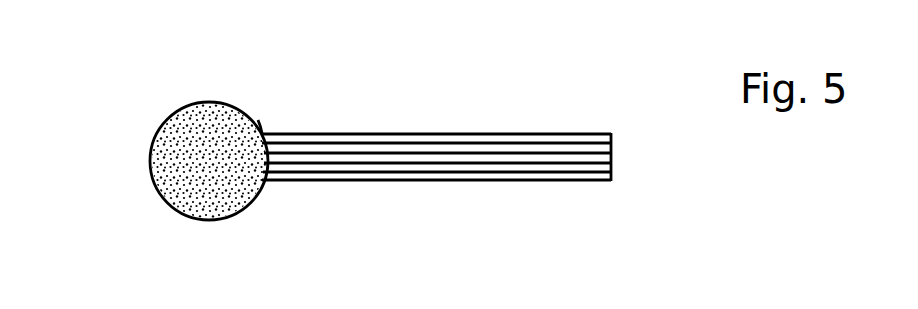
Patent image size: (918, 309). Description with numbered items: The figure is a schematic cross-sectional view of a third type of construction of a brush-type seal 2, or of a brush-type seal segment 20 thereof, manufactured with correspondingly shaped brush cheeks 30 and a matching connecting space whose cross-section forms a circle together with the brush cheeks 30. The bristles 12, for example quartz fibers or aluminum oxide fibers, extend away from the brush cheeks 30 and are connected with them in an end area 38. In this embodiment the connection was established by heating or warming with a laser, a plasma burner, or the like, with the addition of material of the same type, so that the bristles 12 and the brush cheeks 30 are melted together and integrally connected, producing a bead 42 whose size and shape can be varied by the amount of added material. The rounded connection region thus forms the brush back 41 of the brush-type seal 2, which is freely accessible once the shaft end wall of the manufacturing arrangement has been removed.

The brush-type seal 2 is at (190, 256).
The bristles 12 is at (440, 153).
The brush-type seal segment 20 is at (670, 210).
The brush cheek 30 is at (173, 130).
The end area 38 is at (268, 122).
The brush back 41 is at (118, 151).
The bead 42 is at (203, 112).